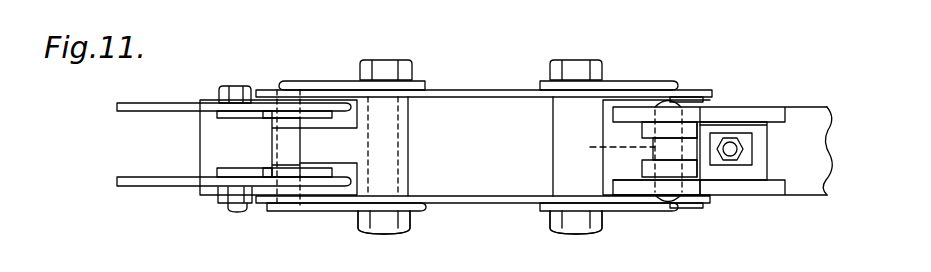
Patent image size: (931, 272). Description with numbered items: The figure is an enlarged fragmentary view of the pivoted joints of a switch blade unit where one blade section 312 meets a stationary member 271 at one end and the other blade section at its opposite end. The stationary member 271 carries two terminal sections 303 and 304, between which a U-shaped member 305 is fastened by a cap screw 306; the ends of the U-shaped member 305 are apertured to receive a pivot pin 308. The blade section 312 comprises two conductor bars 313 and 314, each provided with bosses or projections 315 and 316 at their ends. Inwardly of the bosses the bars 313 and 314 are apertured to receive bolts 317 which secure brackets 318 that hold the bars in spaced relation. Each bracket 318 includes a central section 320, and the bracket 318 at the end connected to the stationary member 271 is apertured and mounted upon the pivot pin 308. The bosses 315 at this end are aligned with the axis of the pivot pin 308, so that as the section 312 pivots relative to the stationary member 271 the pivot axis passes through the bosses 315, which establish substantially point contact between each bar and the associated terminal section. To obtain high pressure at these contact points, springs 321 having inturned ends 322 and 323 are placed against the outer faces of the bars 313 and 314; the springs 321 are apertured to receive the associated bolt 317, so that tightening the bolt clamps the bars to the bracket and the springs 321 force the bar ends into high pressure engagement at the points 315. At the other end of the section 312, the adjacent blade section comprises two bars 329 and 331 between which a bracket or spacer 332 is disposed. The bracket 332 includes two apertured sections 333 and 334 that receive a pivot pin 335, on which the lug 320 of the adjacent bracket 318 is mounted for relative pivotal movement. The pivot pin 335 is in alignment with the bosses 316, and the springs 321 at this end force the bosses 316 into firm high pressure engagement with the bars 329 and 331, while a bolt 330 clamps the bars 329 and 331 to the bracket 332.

The stationary member 271 is at (777, 98).
The terminal section 303 is at (688, 115).
The terminal section 304 is at (700, 186).
The U-shaped member 305 is at (720, 127).
The cap screw 306 is at (740, 150).
The pivot pin 308 is at (600, 147).
The switch blade section 312 is at (479, 69).
The conductor bar 313 is at (433, 90).
The conductor bar 314 is at (470, 205).
The boss 315 is at (693, 97).
The boss 316 is at (284, 111).
The bolt 317 is at (384, 236).
The bracket 318 is at (401, 137).
The central section 320 is at (281, 147).
The spring 321 is at (305, 86).
The inturned end 322 is at (540, 82).
The inturned end 323 is at (673, 103).
The bar 329 is at (131, 85).
The bolt 330 is at (221, 88).
The bar 331 is at (142, 187).
The bracket 332 is at (208, 132).
The bracket section 333 is at (238, 110).
The bracket section 334 is at (212, 188).
The pivot pin 335 is at (352, 210).